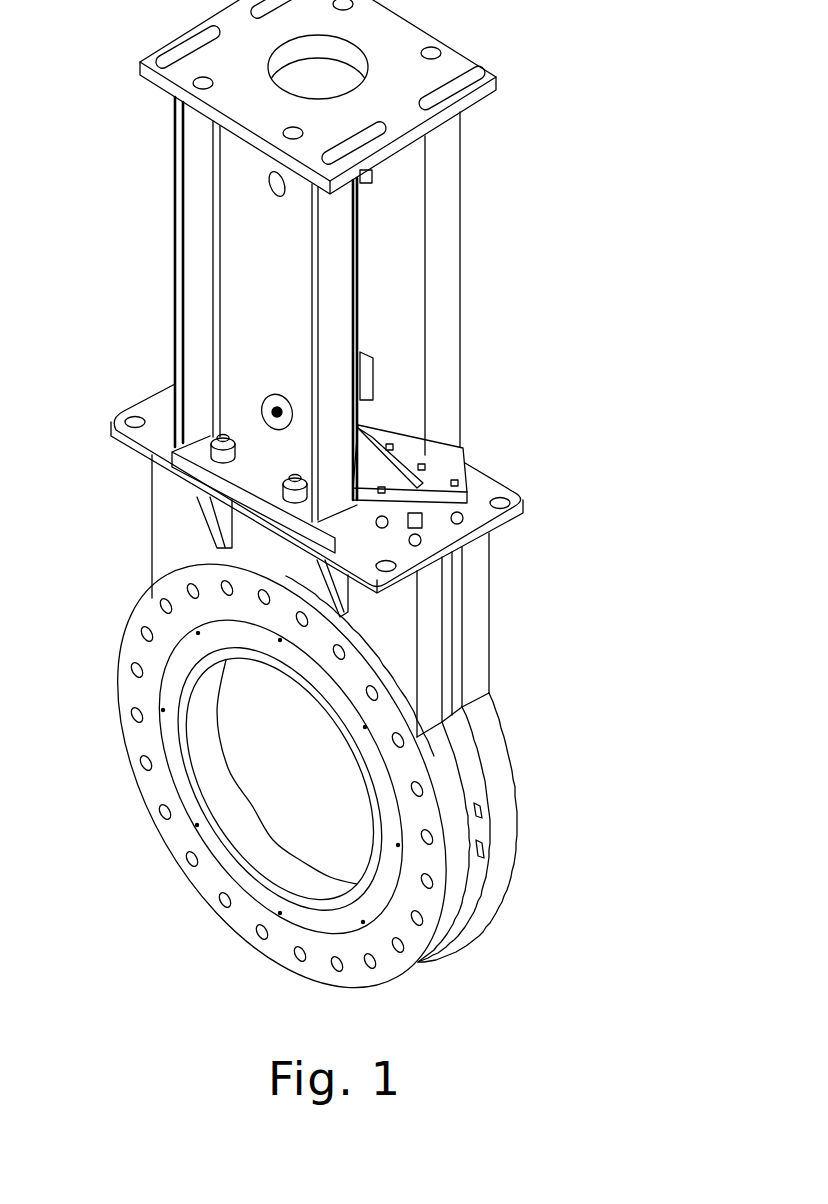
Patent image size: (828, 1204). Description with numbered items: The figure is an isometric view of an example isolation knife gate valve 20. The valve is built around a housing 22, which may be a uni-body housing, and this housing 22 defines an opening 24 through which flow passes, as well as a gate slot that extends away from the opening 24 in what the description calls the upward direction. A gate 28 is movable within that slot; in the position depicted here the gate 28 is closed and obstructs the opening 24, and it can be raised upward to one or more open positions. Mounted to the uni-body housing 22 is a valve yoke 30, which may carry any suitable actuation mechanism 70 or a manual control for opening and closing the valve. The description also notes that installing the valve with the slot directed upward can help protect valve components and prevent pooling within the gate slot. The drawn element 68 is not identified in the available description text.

The isolation knife gate valve 20 is at (603, 465).
The housing 22 is at (518, 808).
The opening 24 is at (283, 808).
The gate 28 is at (375, 445).
The valve yoke 30 is at (175, 240).
The packing gland 68 is at (435, 485).
The actuation mechanism 70 is at (360, 365).